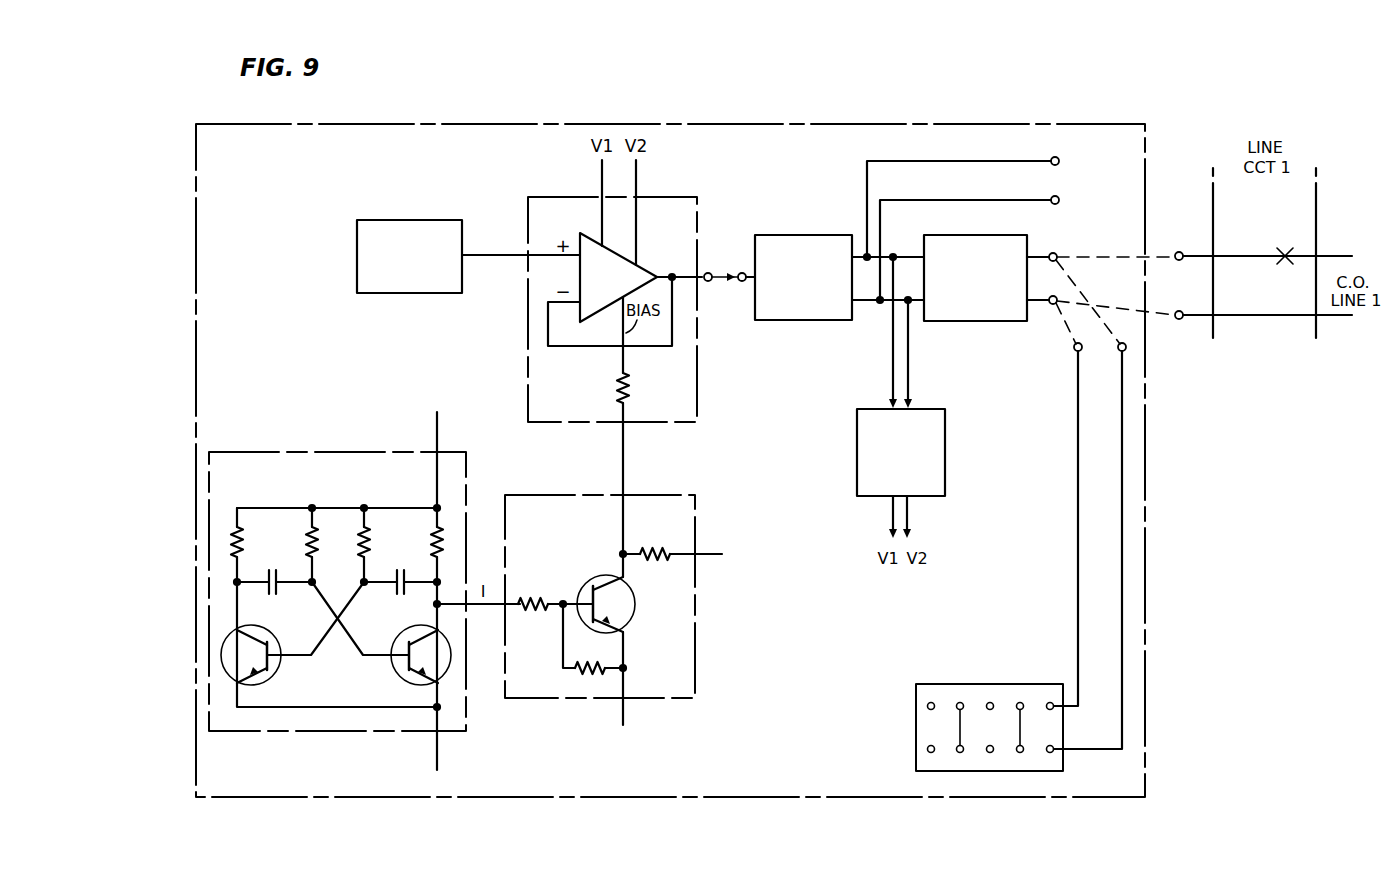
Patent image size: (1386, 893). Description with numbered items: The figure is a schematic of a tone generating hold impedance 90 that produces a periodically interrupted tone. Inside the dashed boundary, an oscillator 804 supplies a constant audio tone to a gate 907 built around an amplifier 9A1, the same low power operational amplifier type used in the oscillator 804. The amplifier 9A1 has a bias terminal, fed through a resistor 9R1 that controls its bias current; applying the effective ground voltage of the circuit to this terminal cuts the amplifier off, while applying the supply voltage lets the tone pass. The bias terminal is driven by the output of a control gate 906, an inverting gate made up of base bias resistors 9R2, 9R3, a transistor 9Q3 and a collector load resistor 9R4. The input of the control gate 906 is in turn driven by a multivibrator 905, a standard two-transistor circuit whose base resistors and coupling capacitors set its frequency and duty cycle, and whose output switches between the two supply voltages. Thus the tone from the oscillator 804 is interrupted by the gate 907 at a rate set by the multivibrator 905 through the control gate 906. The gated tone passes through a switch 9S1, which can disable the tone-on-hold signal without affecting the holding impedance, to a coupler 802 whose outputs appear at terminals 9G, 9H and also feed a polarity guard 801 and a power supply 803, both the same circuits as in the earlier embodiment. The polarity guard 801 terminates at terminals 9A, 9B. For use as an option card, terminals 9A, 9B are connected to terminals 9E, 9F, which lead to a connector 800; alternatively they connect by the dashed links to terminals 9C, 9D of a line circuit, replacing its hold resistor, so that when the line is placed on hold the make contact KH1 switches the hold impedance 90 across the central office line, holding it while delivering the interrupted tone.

The tone generating hold impedance 90 is at (673, 124).
The oscillator 804 is at (410, 220).
The gate 907 is at (541, 197).
The amplifier 9A1 is at (618, 277).
The resistor 9R1 is at (633, 387).
The switch 9S1 is at (713, 272).
The coupler 802 is at (795, 235).
The polarity guard 801 is at (953, 235).
The power supply 803 is at (932, 409).
The connector 800 is at (977, 684).
The terminal 9A is at (1045, 247).
The terminal 9B is at (1048, 290).
The terminal 9C is at (1258, 246).
The terminal 9D is at (1259, 305).
The terminal 9E is at (1090, 543).
The terminal 9F is at (1066, 522).
The terminal 9G is at (978, 204).
The terminal 9H is at (985, 245).
The make contact KH1 is at (1284, 246).
The multivibrator 905 is at (343, 452).
The control gate 906 is at (533, 495).
The base bias resistor 9R2 is at (582, 672).
The base bias resistor 9R3 is at (529, 598).
The collector load resistor 9R4 is at (672, 542).
The transistor 9Q3 is at (637, 607).